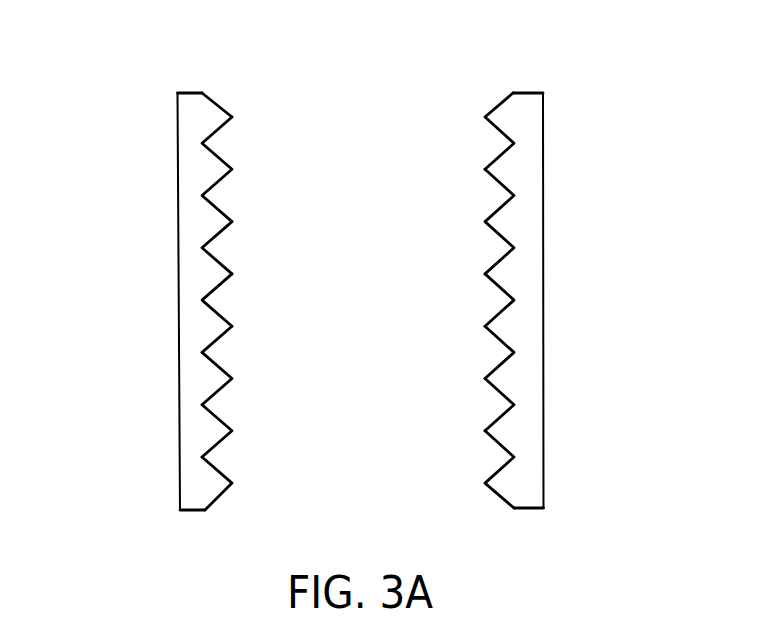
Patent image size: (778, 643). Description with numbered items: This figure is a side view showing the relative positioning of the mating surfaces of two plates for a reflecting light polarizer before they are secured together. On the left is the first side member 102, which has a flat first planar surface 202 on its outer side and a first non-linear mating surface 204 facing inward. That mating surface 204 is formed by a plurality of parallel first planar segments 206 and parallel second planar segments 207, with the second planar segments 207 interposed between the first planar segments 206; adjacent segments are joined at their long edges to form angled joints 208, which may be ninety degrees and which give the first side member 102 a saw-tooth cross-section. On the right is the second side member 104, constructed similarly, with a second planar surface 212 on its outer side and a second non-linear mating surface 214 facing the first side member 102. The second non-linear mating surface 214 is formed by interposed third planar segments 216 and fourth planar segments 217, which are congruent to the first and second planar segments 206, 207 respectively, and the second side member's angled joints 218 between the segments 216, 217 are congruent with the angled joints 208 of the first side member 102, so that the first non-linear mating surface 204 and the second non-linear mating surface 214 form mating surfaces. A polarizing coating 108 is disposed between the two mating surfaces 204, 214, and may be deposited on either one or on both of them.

The first side member 102 is at (187, 127).
The second side member 104 is at (525, 163).
The polarizing coating 108 is at (213, 417).
The first planar surface 202 is at (177, 225).
The first non-linear mating surface 204 is at (262, 460).
The first planar segments 206 is at (215, 347).
The second planar segments 207 is at (225, 318).
The angled joints 208 is at (232, 222).
The second planar surface 212 is at (543, 217).
The second non-linear mating surface 214 is at (461, 137).
The third planar segments 216 is at (492, 422).
The fourth planar segments 217 is at (493, 288).
The grooves 218 is at (485, 274).